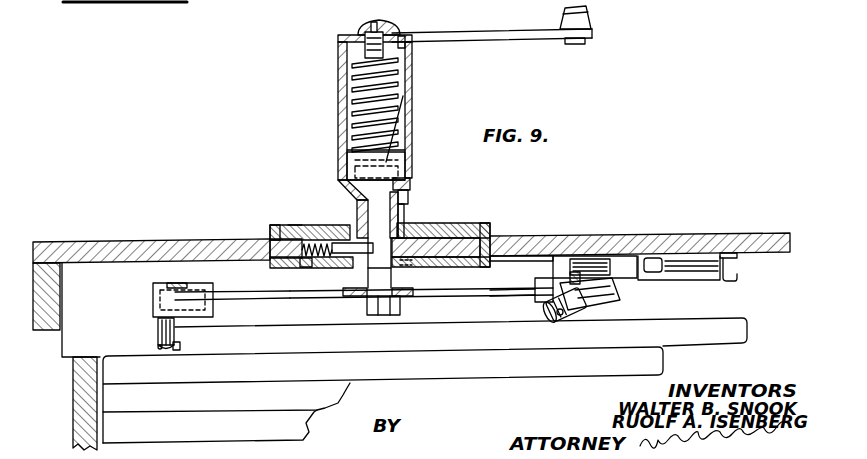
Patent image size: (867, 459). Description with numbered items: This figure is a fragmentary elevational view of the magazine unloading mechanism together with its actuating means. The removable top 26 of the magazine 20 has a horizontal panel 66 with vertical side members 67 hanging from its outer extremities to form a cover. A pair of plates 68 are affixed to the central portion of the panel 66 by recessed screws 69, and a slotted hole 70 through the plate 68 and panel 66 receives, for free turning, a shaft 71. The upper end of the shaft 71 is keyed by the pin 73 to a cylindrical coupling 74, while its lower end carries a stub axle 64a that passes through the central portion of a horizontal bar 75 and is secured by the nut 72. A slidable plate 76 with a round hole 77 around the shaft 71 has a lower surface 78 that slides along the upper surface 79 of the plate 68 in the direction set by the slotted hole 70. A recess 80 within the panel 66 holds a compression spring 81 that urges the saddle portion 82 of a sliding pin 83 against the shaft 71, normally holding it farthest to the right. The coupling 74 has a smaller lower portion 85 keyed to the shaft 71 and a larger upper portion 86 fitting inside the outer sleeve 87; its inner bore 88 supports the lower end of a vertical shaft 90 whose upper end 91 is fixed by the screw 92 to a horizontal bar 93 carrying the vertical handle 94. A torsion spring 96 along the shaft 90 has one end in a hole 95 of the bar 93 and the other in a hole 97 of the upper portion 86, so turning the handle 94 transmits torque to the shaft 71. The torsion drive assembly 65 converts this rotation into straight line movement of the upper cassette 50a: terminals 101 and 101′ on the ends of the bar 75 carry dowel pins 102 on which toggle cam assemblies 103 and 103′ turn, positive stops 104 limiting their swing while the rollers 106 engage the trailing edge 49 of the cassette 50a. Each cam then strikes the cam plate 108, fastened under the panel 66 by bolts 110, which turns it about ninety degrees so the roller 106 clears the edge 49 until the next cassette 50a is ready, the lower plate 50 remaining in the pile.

The magazine 20 is at (143, 3).
The removable top 26 is at (123, 238).
The trailing edge 49 is at (180, 347).
The base plate 50 is at (386, 379).
The upper cassette 50a is at (724, 320).
The stub axle 64a is at (366, 298).
The torsion drive assembly 65 is at (289, 333).
The horizontal panel 66 is at (677, 232).
The vertical side members 67 is at (43, 333).
The plates 68 is at (270, 233).
The recessed screws 69 is at (250, 262).
The slotted hole 70 is at (353, 218).
The shaft 71 is at (367, 275).
The nut 72 is at (401, 306).
The pin 73 is at (408, 193).
The cylindrical coupling 74 is at (406, 207).
The horizontal bar 75 is at (443, 292).
The slidable plate 76 is at (435, 224).
The round hole 77 is at (402, 223).
The lower surface 78 is at (297, 225).
The upper surface 79 is at (273, 228).
The recess 80 is at (300, 263).
The compression spring 81 is at (305, 265).
The saddle portion 82 is at (395, 276).
The sliding pin 83 is at (350, 232).
The lower portion 85 is at (352, 193).
The upper portion 86 is at (387, 173).
The outer sleeve 87 is at (413, 78).
The inner bore 88 is at (392, 165).
The vertical shaft 90 is at (370, 128).
The upper end 91 is at (392, 50).
The screw 92 is at (374, 27).
The horizontal bar 93 is at (447, 36).
The vertical handle 94 is at (575, 21).
The hole 95 is at (405, 34).
The torsion spring 96 is at (404, 115).
The hole 97 is at (344, 157).
The terminal 101 is at (212, 290).
The terminal 101′ is at (543, 268).
The dowel pins 102 is at (155, 295).
The toggle cam assembly 103 is at (161, 325).
The toggle cam assembly 103′ is at (600, 293).
The positive stops 104 is at (582, 272).
The rollers 106 is at (157, 346).
The cam plate 108 is at (718, 278).
The bolts 110 is at (569, 252).